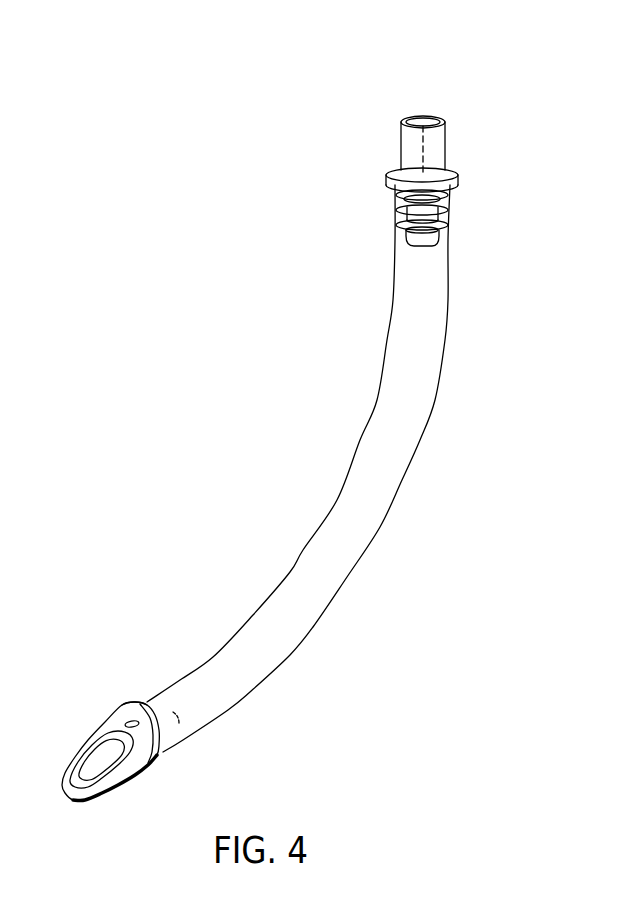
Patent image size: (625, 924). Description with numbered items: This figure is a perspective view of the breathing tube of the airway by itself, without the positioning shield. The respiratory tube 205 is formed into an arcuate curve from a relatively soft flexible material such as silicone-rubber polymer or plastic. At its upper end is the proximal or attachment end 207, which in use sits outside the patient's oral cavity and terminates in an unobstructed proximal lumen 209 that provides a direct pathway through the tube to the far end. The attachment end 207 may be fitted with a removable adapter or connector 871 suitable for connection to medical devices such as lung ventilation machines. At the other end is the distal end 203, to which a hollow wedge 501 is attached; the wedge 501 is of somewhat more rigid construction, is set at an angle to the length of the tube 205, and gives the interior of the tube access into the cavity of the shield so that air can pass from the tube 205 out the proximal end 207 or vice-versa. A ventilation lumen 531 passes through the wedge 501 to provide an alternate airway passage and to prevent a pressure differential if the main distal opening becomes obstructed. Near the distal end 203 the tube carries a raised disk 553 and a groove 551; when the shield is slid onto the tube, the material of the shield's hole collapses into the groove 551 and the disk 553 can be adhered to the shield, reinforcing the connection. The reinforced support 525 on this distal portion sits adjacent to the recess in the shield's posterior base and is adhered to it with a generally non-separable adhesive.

The respiratory tube 205 is at (402, 547).
The proximal end 207 is at (450, 190).
The connector 871 is at (453, 119).
The proximal lumen 209 is at (421, 119).
The distal end 203 is at (141, 734).
The hollow wedge 501 is at (101, 759).
The ventilation lumen 531 is at (132, 724).
The raised disk 553 is at (134, 703).
The groove 551 is at (146, 733).
The reinforced support 525 is at (115, 778).